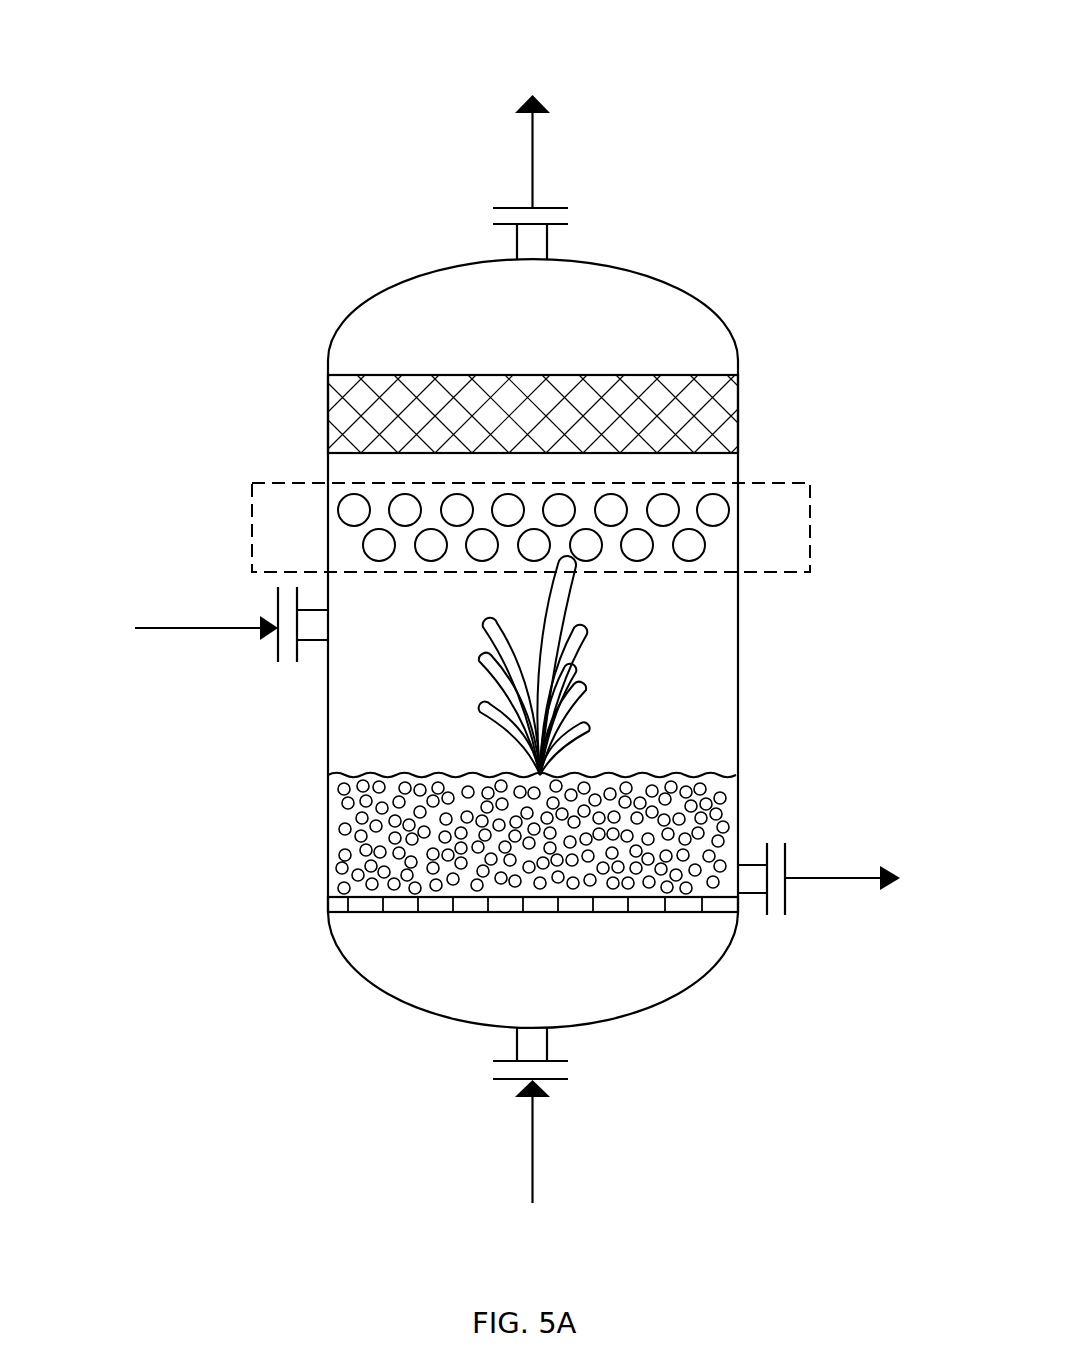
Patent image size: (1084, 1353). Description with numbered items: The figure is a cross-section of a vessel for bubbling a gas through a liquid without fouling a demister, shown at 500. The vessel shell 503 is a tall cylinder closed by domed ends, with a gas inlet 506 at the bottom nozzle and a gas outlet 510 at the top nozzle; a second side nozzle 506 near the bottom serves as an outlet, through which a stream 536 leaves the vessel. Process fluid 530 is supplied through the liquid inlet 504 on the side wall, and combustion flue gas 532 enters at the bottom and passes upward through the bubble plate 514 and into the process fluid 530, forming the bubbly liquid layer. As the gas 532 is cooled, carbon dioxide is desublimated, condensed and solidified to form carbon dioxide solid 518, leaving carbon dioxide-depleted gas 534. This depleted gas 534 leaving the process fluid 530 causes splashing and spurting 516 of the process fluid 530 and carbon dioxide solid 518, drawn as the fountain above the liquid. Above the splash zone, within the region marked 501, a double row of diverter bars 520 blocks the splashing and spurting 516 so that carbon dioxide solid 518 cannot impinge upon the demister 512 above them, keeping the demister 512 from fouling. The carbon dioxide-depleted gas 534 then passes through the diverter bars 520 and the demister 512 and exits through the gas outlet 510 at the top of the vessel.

The cross-section of vessel 500 is at (164, 58).
The isometric cutaway view of the diverter 501 is at (252, 483).
The vessel shell 503 is at (388, 290).
The liquid inlet 504 is at (308, 645).
The gas inlet 506 is at (752, 897).
The gas outlet 510 is at (548, 240).
The demister 512 is at (323, 405).
The bubble plate 514 is at (330, 898).
The splashing and spurting 516 is at (563, 603).
The carbon dioxide solid 518 is at (728, 810).
The diverter bars 520 is at (729, 505).
The process fluid 530 is at (332, 813).
The combustion flue gas 532 is at (534, 1162).
The carbon dioxide-depleted gas 534 is at (532, 133).
The side outlet stream 536 is at (872, 880).